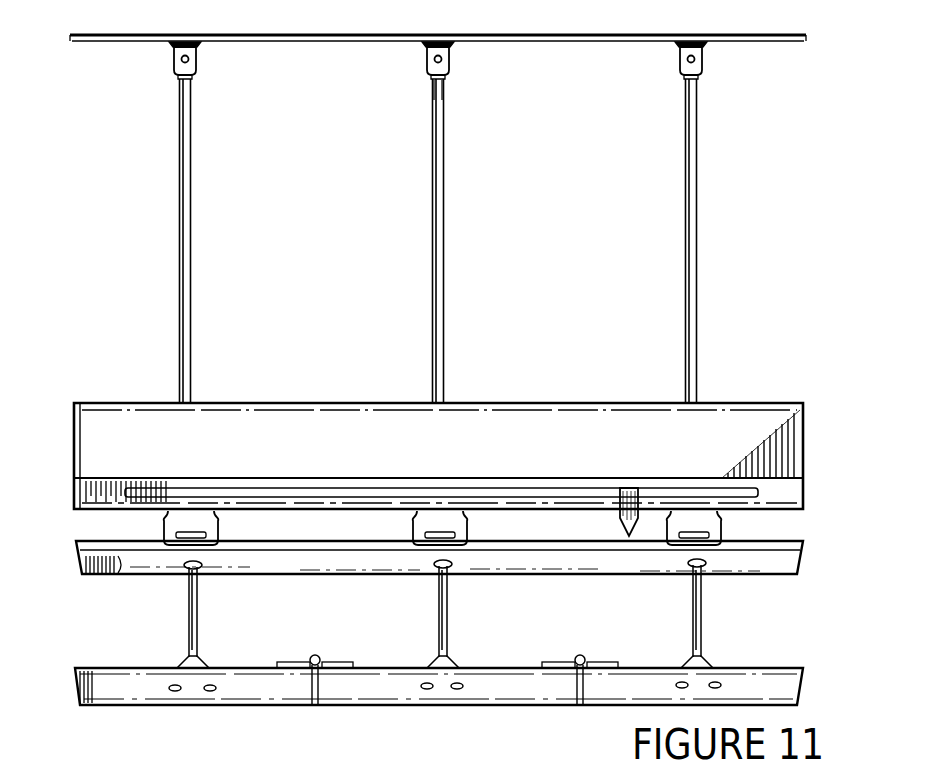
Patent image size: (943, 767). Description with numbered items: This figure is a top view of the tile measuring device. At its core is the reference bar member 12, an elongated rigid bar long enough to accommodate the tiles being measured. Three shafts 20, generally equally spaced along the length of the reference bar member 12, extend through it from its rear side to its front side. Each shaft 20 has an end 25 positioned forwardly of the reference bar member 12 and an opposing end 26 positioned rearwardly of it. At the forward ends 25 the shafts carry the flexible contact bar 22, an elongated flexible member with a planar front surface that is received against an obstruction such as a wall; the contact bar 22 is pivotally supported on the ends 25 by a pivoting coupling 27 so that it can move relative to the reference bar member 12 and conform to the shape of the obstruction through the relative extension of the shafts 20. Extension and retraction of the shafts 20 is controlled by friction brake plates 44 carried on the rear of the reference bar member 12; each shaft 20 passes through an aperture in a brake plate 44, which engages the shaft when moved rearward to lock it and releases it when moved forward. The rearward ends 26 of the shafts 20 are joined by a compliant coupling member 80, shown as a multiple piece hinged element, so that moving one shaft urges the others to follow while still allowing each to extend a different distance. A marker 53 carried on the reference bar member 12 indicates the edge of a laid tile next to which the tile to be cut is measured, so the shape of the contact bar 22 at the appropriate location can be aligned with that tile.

The reference bar member 12 is at (716, 437).
The shaft 20 is at (444, 233).
The flexible contact bar 22 is at (533, 48).
The end of shaft 25 is at (445, 78).
The opposing end of shaft 26 is at (197, 654).
The pivoting coupling 27 is at (410, 56).
The friction brake plate 44 is at (78, 548).
The marker 53 is at (632, 488).
The compliant coupling member 80 is at (122, 692).